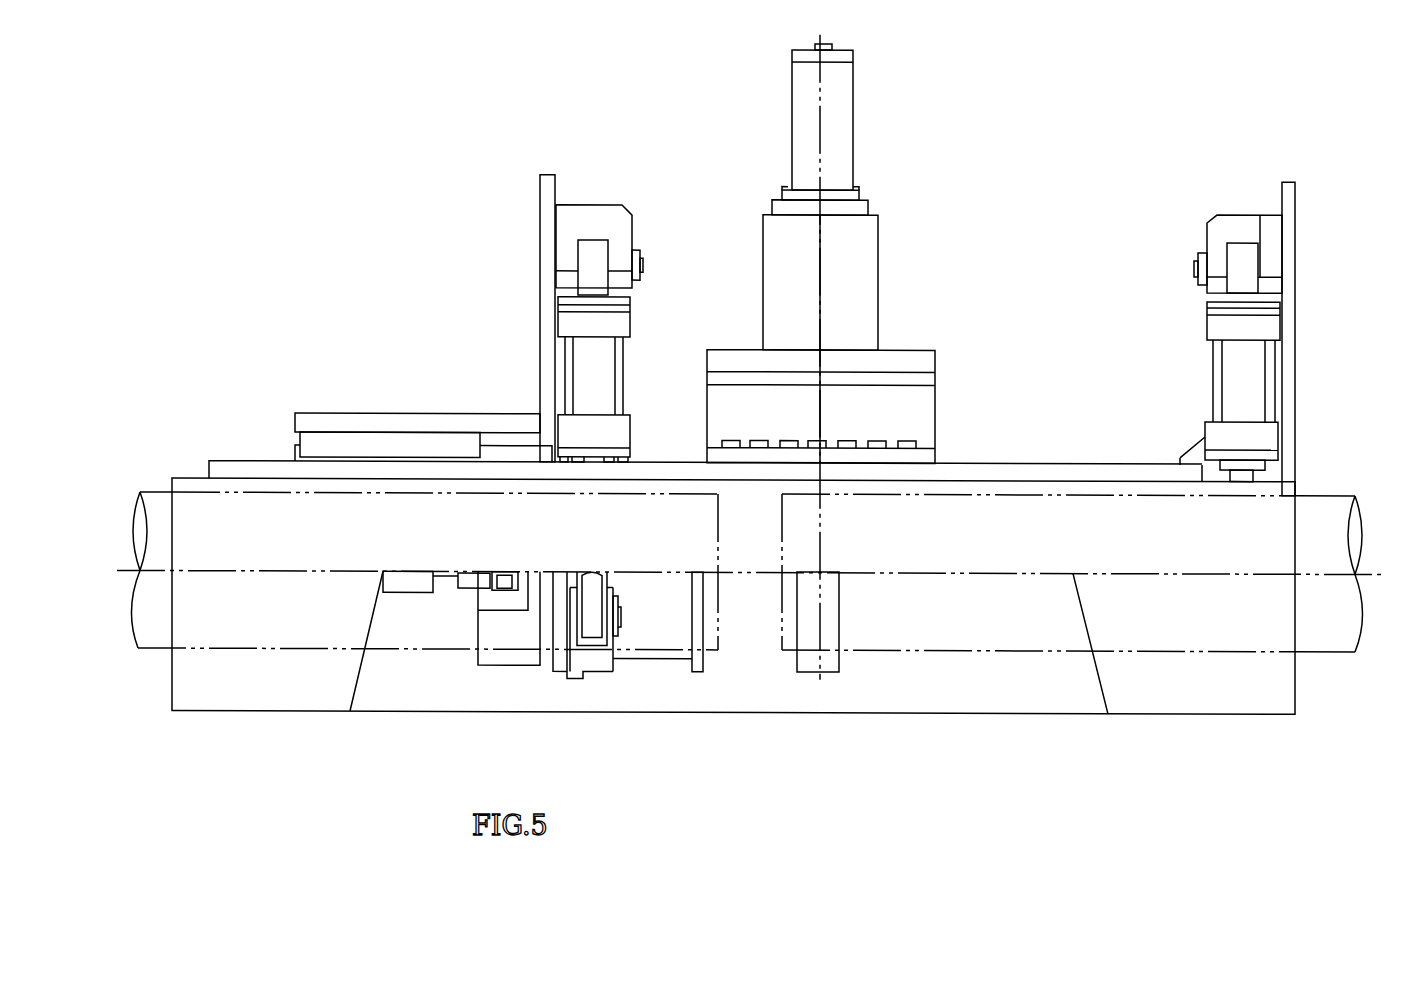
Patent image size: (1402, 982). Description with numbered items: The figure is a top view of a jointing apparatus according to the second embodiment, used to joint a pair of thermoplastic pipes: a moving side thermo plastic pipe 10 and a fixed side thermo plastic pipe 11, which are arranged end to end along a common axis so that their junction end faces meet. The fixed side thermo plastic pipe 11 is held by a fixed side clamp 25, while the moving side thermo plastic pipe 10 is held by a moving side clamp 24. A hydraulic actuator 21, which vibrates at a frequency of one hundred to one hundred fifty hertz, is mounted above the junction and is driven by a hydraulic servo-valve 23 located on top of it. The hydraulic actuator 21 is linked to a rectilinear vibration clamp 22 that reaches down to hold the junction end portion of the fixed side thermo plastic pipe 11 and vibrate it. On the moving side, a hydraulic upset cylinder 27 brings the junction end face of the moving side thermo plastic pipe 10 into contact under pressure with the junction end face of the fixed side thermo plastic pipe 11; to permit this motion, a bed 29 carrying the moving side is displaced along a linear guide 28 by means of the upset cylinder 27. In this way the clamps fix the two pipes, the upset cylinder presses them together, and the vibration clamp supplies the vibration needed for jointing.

The moving side thermo plastic pipe 10 is at (155, 490).
The fixed side thermo plastic pipe 11 is at (1320, 493).
The hydraulic actuator 21 is at (880, 247).
The rectilinear vibration clamp 22 is at (823, 670).
The hydraulic servo-valve 23 is at (855, 128).
The moving side clamp 24 is at (605, 203).
The fixed side clamp 25 is at (1238, 211).
The hydraulic upset cylinder 27 is at (417, 592).
The linear guide 28 is at (293, 447).
The bed 29 is at (392, 412).